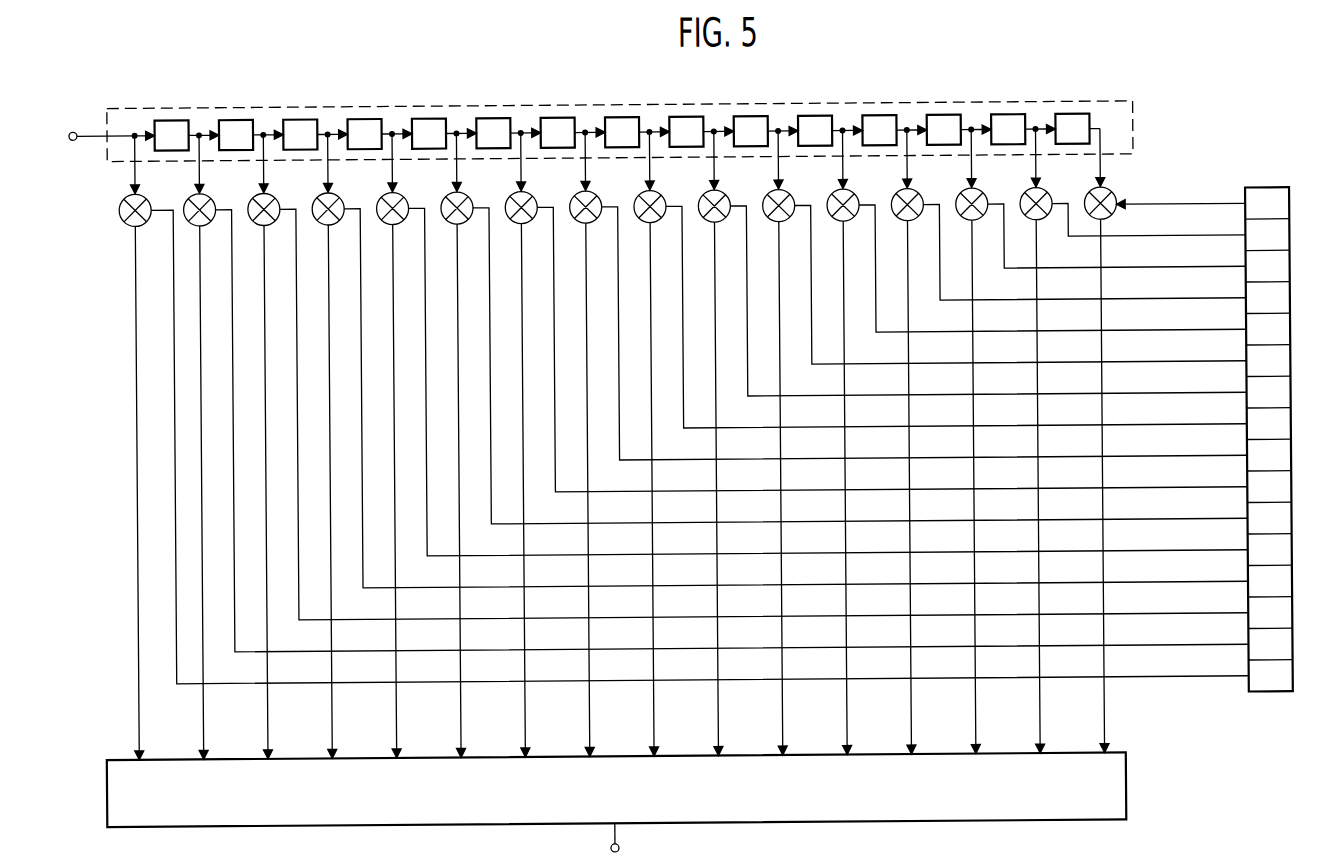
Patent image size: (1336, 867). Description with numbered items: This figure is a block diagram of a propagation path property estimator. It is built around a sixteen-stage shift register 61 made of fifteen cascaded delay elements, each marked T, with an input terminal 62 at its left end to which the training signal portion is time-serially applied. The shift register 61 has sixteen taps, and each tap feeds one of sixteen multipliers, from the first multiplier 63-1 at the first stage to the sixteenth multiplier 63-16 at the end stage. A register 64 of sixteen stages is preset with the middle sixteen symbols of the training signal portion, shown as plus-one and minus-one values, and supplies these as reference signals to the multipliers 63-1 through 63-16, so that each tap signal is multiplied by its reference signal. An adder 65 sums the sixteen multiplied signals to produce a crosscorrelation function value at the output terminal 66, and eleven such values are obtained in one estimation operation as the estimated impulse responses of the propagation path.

The sixteen-stage shift register 61 is at (365, 104).
The input terminal 62 is at (75, 128).
The first multiplier 63-1 is at (123, 198).
The sixteenth multiplier 63-16 is at (1114, 195).
The register 64 is at (1253, 192).
The adder 65 is at (1124, 774).
The output terminal 66 is at (616, 848).